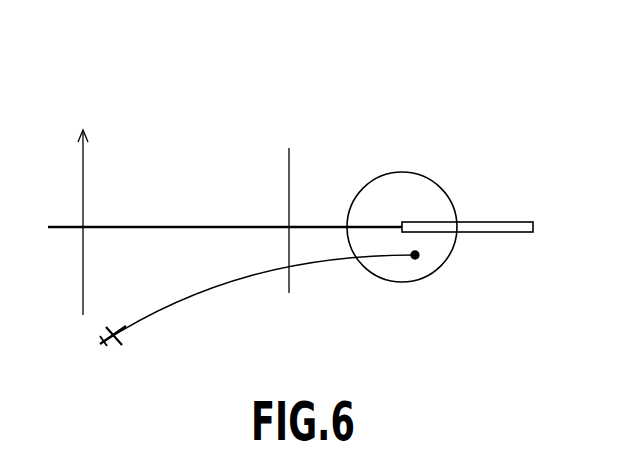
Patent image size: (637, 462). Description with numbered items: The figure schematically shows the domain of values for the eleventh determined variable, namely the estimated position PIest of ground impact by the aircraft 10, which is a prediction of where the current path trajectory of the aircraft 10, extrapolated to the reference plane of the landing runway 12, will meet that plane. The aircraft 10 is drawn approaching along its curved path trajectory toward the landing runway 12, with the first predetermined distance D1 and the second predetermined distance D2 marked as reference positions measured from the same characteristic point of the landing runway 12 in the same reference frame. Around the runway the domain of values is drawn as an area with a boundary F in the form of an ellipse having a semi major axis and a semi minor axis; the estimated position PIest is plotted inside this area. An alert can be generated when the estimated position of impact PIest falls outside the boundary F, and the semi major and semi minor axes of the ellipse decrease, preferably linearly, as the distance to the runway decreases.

The first predetermined distance D1 is at (88, 227).
The second predetermined distance D2 is at (292, 227).
The boundary F is at (436, 181).
The landing runway 12 is at (507, 222).
The aircraft 10 is at (121, 340).
The estimated position of ground impact PIest is at (417, 262).